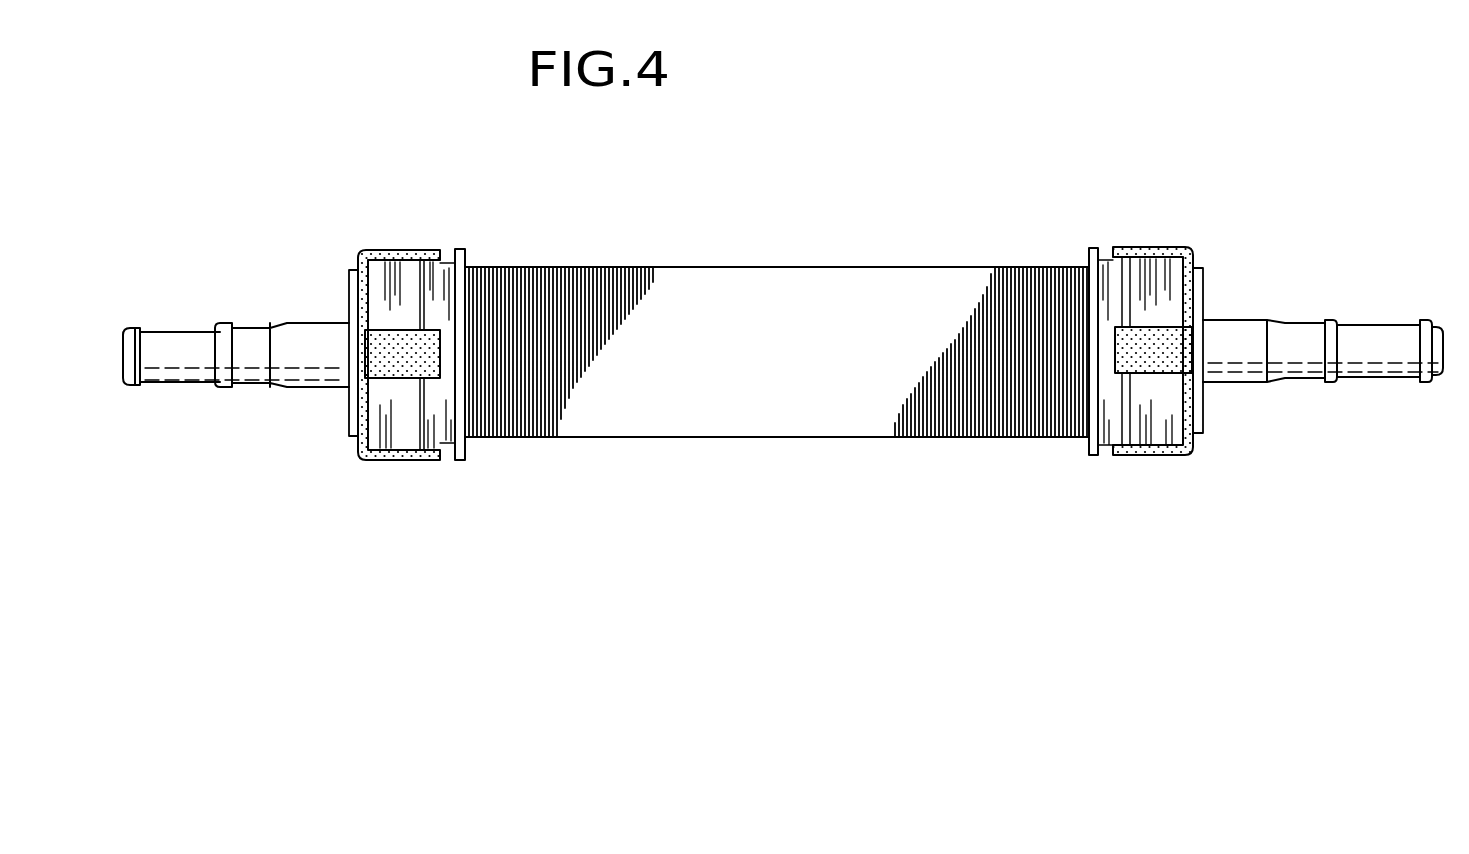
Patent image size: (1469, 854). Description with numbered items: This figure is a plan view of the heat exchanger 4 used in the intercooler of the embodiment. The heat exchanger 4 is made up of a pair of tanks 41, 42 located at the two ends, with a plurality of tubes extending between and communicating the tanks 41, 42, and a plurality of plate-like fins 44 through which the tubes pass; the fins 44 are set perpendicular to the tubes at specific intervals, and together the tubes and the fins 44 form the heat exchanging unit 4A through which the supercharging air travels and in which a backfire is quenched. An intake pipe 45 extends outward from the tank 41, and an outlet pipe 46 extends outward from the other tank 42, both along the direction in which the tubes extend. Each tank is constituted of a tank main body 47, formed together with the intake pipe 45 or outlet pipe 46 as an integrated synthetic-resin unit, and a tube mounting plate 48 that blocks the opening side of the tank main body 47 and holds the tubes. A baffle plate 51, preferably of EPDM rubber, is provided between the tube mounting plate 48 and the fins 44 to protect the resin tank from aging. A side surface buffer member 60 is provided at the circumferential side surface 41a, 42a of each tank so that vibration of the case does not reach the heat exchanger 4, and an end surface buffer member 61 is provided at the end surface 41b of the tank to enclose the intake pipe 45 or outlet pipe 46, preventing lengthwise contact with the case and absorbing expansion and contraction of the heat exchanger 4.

The heat exchanger 4 is at (846, 456).
The heat exchanging unit 4A is at (937, 307).
The tank 41 is at (393, 287).
The circumferential side surface 41a is at (382, 273).
The end surface 41b is at (343, 425).
The tank 42 is at (1150, 277).
The circumferential side surface 42a is at (1180, 268).
The fins 44 is at (587, 283).
The intake pipe 45 is at (255, 365).
The outlet pipe 46 is at (1245, 380).
The tank main body 47 is at (402, 430).
The tube mounting plate 48 is at (442, 288).
The baffle plate 51 is at (467, 455).
The side surface buffer member 60 is at (395, 343).
The end surface buffer member 61 is at (350, 362).